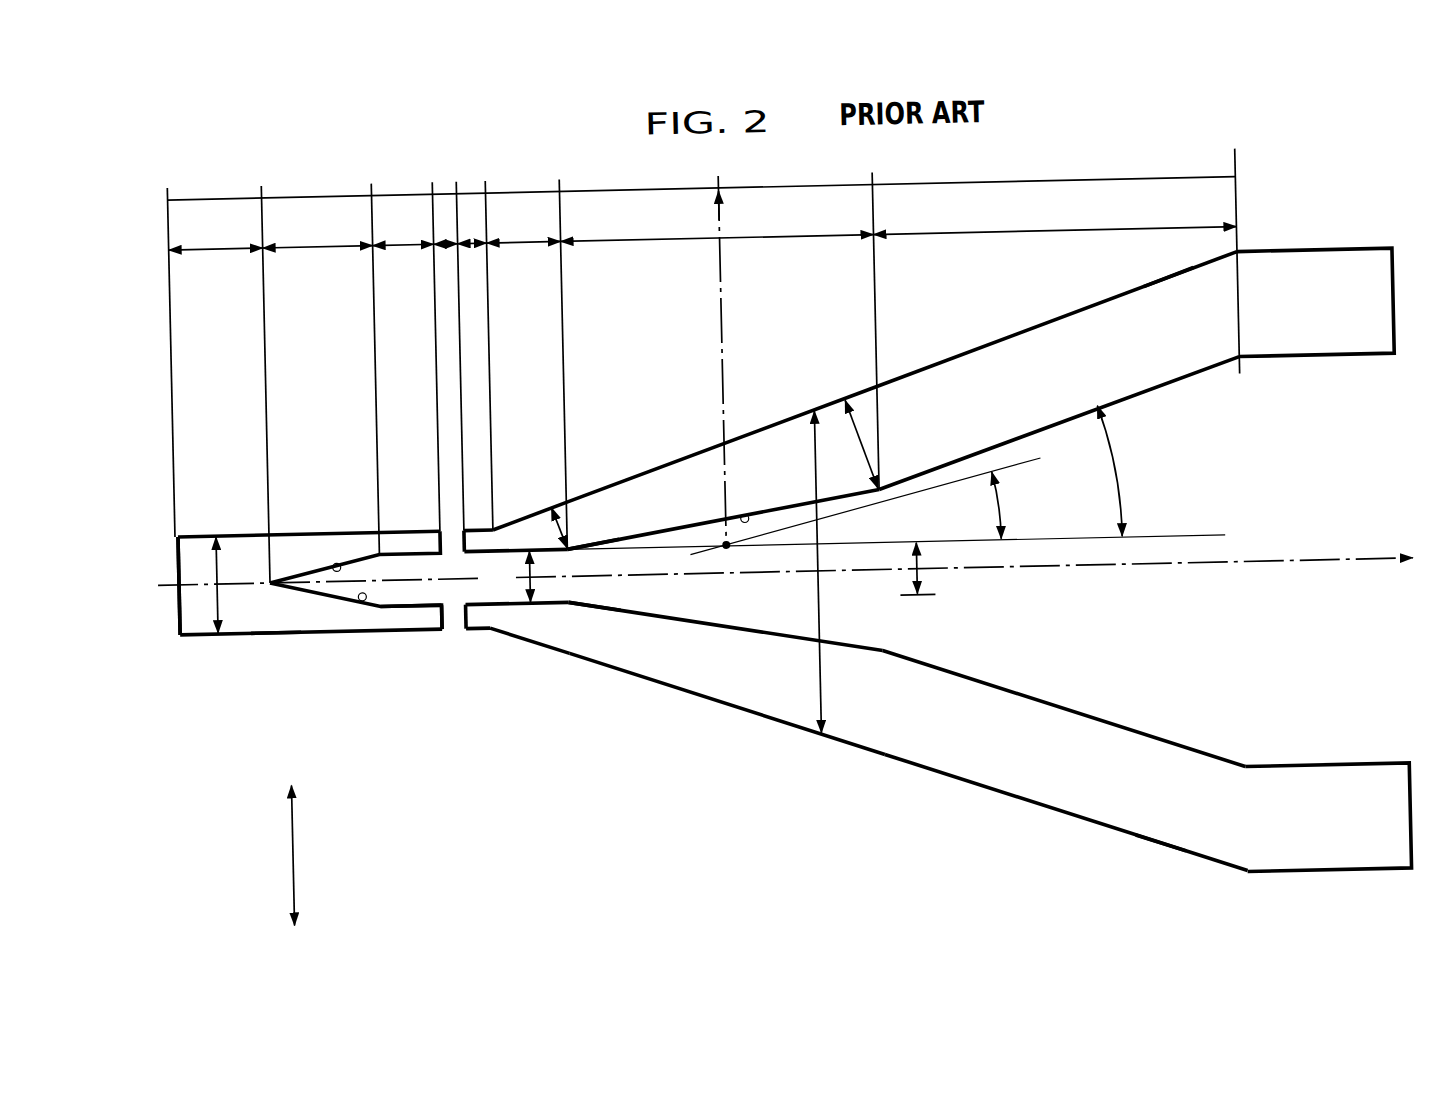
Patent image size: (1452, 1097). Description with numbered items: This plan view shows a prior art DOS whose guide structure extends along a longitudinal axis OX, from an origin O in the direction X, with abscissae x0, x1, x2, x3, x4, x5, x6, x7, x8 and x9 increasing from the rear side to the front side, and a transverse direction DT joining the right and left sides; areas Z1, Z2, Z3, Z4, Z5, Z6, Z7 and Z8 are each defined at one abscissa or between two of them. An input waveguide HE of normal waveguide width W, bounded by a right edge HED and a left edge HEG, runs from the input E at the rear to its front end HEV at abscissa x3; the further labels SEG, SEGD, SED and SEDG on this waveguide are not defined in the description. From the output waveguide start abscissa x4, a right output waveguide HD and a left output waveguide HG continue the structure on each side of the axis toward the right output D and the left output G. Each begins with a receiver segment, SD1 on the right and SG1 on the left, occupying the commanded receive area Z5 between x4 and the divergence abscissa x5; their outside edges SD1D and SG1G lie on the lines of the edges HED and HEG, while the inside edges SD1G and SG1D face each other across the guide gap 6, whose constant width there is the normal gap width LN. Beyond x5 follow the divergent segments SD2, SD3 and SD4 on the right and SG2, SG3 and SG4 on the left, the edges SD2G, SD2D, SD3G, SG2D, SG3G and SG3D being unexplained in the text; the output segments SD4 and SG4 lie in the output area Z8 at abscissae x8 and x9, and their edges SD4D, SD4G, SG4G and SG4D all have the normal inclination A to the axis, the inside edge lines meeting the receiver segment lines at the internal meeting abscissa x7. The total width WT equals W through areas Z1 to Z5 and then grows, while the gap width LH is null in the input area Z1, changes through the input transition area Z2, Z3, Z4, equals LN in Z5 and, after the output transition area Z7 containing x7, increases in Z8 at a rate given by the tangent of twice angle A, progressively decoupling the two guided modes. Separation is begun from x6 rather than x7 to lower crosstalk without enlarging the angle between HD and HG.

The input E is at (310, 569).
The left output G is at (1401, 330).
The right output D is at (1407, 842).
The left edge of input waveguide HEG is at (243, 535).
The right edge of input waveguide HED is at (240, 638).
The input waveguide HE is at (276, 639).
The front end of input waveguide HEV is at (455, 641).
The left output waveguide HG is at (1175, 296).
The right output waveguide HD is at (1180, 876).
The upper arm segment of E SEG is at (308, 503).
The lower edge of upper arm of E SEGD is at (337, 568).
The lower arm segment of E SED is at (311, 648).
The upper edge of lower arm of E SEDG is at (362, 604).
The guide gap 6 is at (400, 614).
The left receiver segment SG1 is at (475, 487).
The left outside edge of left receiver segment SG1G is at (475, 534).
The right inside edge of left receiver segment SG1D is at (457, 556).
The left divergent segment SG2 is at (572, 522).
The lower edge of segment SG2 SG2D is at (567, 636).
The left divergent segment SG3 is at (721, 445).
The upper edge of segment SG3 SG3G is at (700, 460).
The lower edge of segment SG3 SG3D is at (746, 527).
The left output segment SG4 is at (1058, 371).
The left outside edge of left output segment SG4G is at (1081, 326).
The right inside edge of left output segment SG4D is at (1155, 412).
The right receiver segment SD1 is at (530, 679).
The left inside edge of right receiver segment SD1G is at (470, 613).
The right outside edge of right receiver segment SD1D is at (490, 637).
The right divergent segment SD2 is at (607, 611).
The upper edge of segment SD2 SD2G is at (590, 555).
The lower edge of segment SD2 SD2D is at (697, 707).
The right divergent segment SD3 is at (727, 685).
The upper edge of segment SD3 SD3G is at (726, 633).
The right output segment SD4 is at (1065, 761).
The left inside edge of right output segment SD4G is at (1117, 746).
The right outside edge of right output segment SD4D is at (1110, 849).
The normal waveguide width W is at (221, 590).
The total width WT is at (823, 625).
The gap width LH is at (528, 585).
The normal gap width LN is at (921, 590).
The normal output segment inclination A is at (1139, 481).
The origin of axis OX O is at (181, 585).
The longitudinal axis direction X is at (785, 549).
The transverse direction DT is at (291, 856).
The abscissa x0 is at (172, 346).
The abscissa x1 is at (267, 368).
The gap start abscissa x2 is at (378, 352).
The input waveguide front end abscissa x3 is at (439, 340).
The output waveguide start abscissa x4 is at (465, 339).
The divergence abscissa x5 is at (494, 339).
The abscissa x6 is at (565, 348).
The internal meeting abscissa x7 is at (721, 344).
The abscissa x8 is at (876, 314).
The abscissa x9 is at (1236, 252).
The input area Z1 is at (215, 230).
The input transition area Z2 is at (317, 228).
The input transition area Z3 is at (403, 225).
The input transition area Z4 is at (452, 258).
The commanded receive area Z5 is at (476, 258).
The area Z6 is at (523, 223).
The output transition area Z7 is at (717, 219).
The output area Z8 is at (1055, 212).